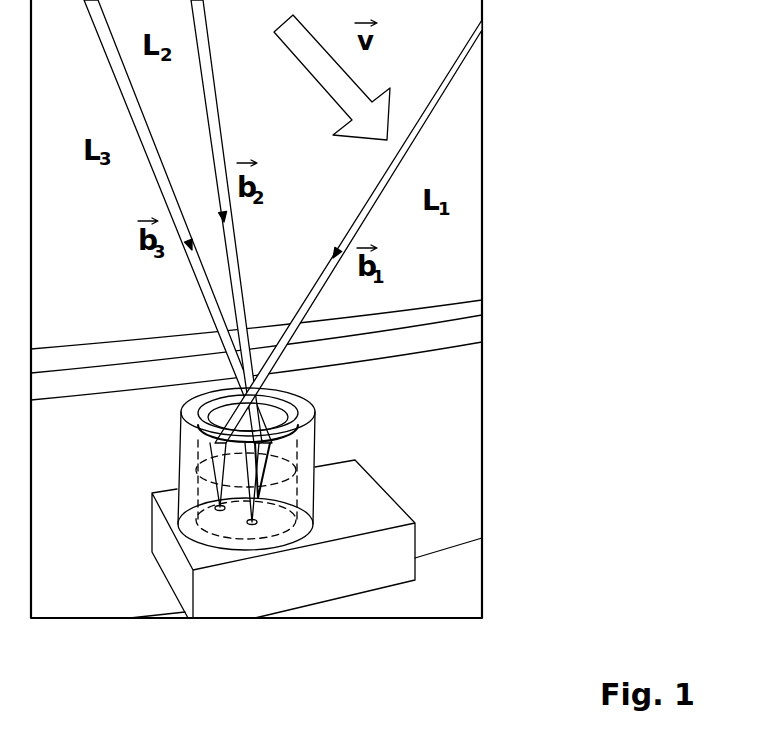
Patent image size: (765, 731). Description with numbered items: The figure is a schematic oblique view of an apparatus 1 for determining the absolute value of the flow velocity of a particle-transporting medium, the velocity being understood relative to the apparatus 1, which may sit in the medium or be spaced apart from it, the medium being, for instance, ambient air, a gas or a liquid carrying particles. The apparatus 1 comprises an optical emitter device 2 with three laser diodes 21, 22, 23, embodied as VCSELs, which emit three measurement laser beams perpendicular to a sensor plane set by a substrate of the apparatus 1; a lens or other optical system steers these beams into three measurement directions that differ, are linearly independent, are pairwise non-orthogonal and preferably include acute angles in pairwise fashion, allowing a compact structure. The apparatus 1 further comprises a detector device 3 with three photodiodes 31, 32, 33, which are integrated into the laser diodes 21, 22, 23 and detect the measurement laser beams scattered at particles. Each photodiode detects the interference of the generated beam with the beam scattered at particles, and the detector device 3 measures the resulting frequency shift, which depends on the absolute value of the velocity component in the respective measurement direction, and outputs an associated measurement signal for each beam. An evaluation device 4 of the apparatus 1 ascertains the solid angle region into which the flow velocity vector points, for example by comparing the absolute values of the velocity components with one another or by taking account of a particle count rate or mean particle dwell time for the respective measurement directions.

The apparatus 1 is at (308, 536).
The optical emitter device 2 is at (194, 479).
The detector device 3 is at (152, 508).
The evaluation device 4 is at (170, 565).
The laser diode 21 is at (232, 563).
The photodiode 31 is at (220, 512).
The laser diode 22 is at (305, 563).
The photodiode 32 is at (254, 526).
The laser diode 23 is at (357, 563).
The photodiode 33 is at (262, 500).